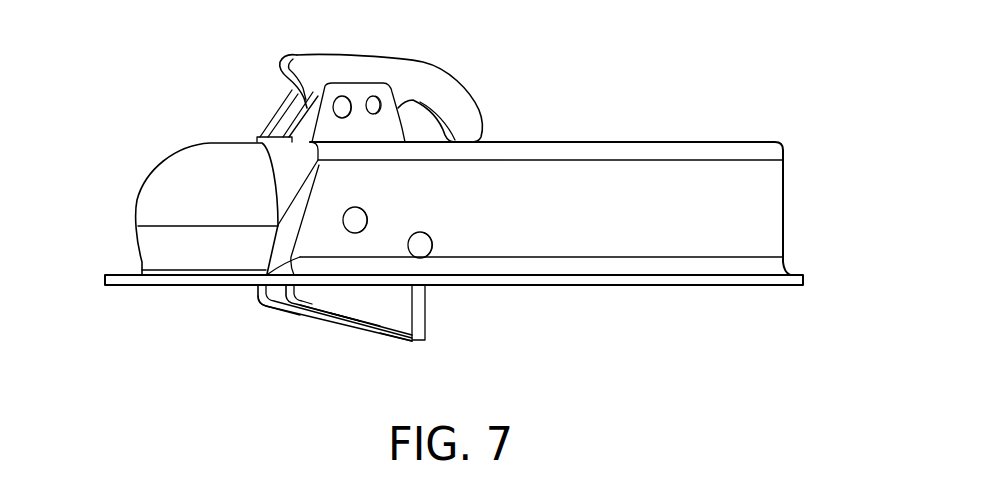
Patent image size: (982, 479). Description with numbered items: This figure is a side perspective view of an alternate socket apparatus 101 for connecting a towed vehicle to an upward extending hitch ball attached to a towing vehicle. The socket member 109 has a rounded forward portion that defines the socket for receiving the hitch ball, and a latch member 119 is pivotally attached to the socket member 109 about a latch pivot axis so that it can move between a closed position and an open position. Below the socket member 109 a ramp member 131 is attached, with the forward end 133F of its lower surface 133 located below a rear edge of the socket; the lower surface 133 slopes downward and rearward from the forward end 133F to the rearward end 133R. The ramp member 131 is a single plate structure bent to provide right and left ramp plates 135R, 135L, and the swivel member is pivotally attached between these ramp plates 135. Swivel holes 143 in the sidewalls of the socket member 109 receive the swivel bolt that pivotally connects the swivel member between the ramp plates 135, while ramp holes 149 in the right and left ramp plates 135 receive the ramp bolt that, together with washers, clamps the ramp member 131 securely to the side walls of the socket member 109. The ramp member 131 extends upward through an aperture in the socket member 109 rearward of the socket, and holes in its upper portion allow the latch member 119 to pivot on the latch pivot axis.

The socket apparatus 101 is at (583, 123).
The socket member 109 is at (182, 146).
The latch member 119 is at (418, 63).
The swivel holes 143 is at (357, 215).
The ramp holes 149 is at (430, 243).
The ramp member 131 is at (427, 312).
The lower surface 133 is at (345, 333).
The forward end 133F is at (262, 300).
The rearward end 133R is at (410, 343).
The ramp plates 135 is at (281, 328).
The right ramp plate 135R is at (300, 320).
The left ramp plate 135L is at (326, 322).